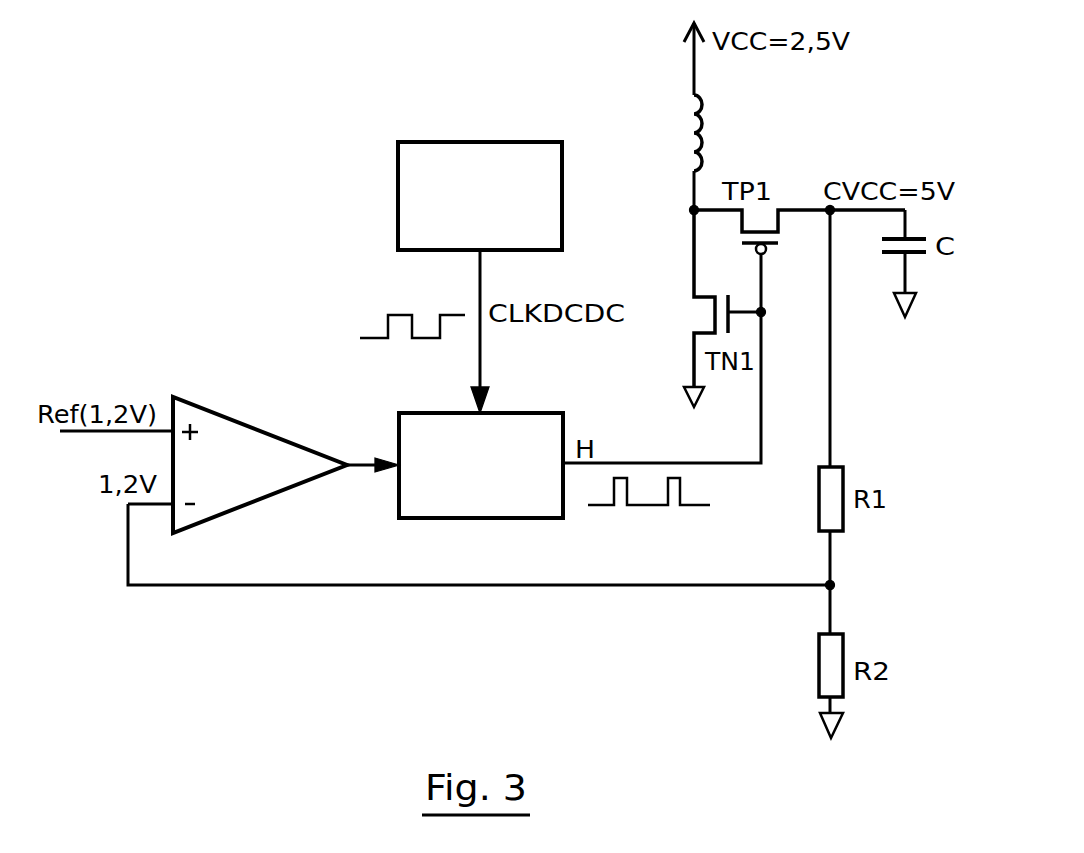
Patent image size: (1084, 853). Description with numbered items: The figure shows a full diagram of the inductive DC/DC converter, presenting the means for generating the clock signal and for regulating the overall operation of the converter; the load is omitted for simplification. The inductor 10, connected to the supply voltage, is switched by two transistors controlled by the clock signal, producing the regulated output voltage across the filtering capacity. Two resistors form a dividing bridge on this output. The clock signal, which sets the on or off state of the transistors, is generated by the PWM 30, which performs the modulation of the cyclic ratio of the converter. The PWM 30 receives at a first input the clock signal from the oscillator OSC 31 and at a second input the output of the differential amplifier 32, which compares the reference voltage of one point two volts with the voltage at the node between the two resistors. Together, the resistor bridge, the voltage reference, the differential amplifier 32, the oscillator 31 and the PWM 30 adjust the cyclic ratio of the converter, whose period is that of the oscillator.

The inductor 10 is at (709, 134).
The PWM 30 is at (481, 518).
The oscillator OSC 31 is at (455, 142).
The differential amplifier 32 is at (215, 410).